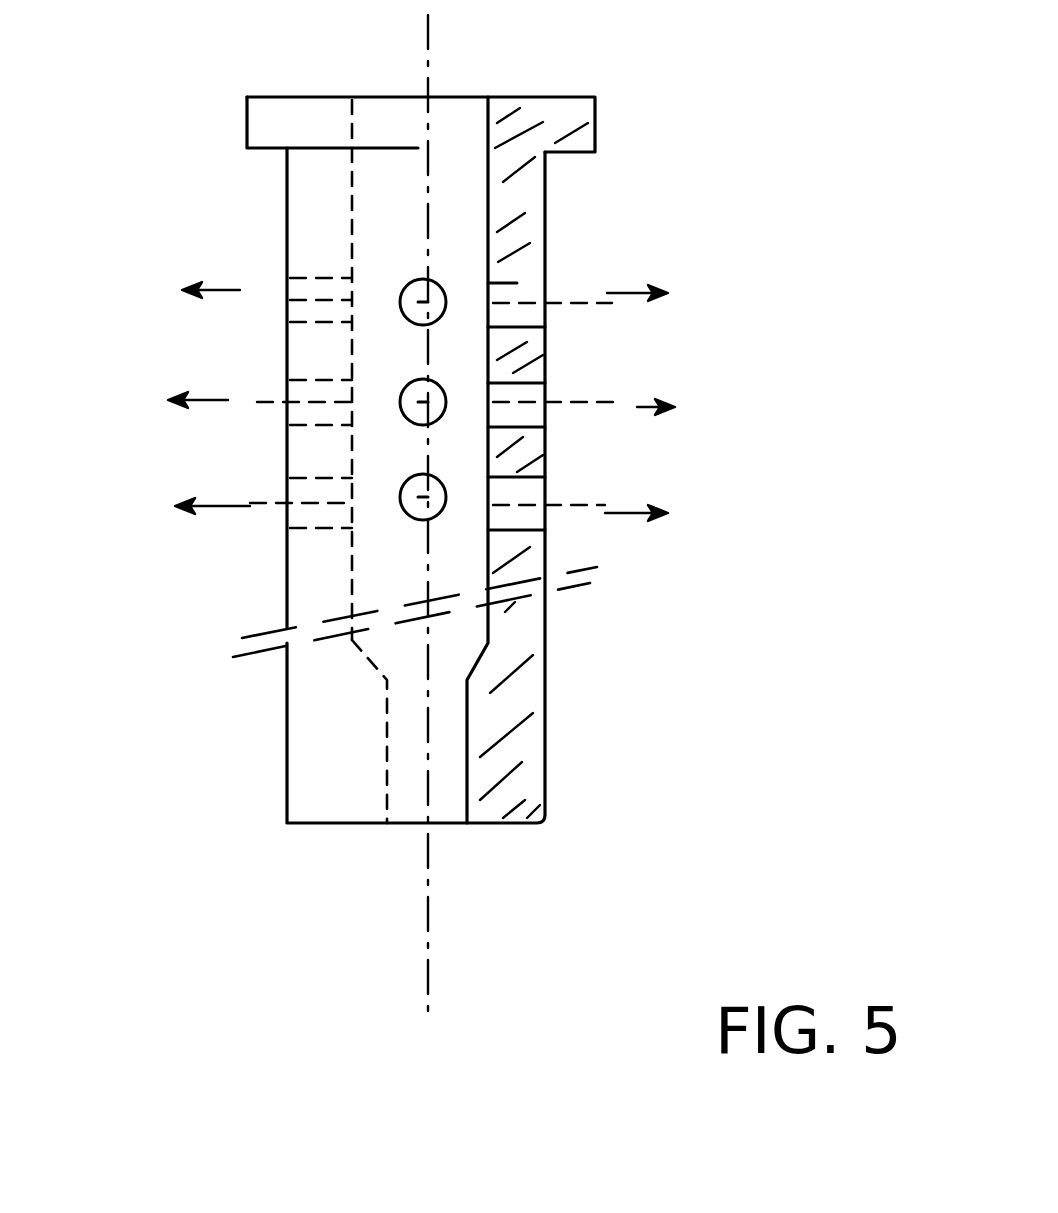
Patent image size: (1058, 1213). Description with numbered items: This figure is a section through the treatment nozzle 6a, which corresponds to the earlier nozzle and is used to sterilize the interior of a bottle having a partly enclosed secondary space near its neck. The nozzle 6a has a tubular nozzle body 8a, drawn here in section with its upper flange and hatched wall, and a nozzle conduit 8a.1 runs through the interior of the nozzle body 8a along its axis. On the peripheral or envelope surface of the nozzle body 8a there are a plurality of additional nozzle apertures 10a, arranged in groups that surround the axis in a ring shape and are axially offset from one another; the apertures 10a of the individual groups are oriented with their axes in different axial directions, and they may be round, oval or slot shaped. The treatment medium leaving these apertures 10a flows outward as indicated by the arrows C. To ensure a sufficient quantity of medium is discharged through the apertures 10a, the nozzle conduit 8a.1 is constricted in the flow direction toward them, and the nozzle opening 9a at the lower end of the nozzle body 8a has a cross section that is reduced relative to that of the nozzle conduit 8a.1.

The nozzle 6a is at (648, 125).
The nozzle body 8a is at (535, 675).
The nozzle conduit 8a.1 is at (385, 217).
The nozzle opening 9a is at (450, 822).
The additional nozzle apertures 10a is at (423, 298).
The arrow C is at (608, 393).